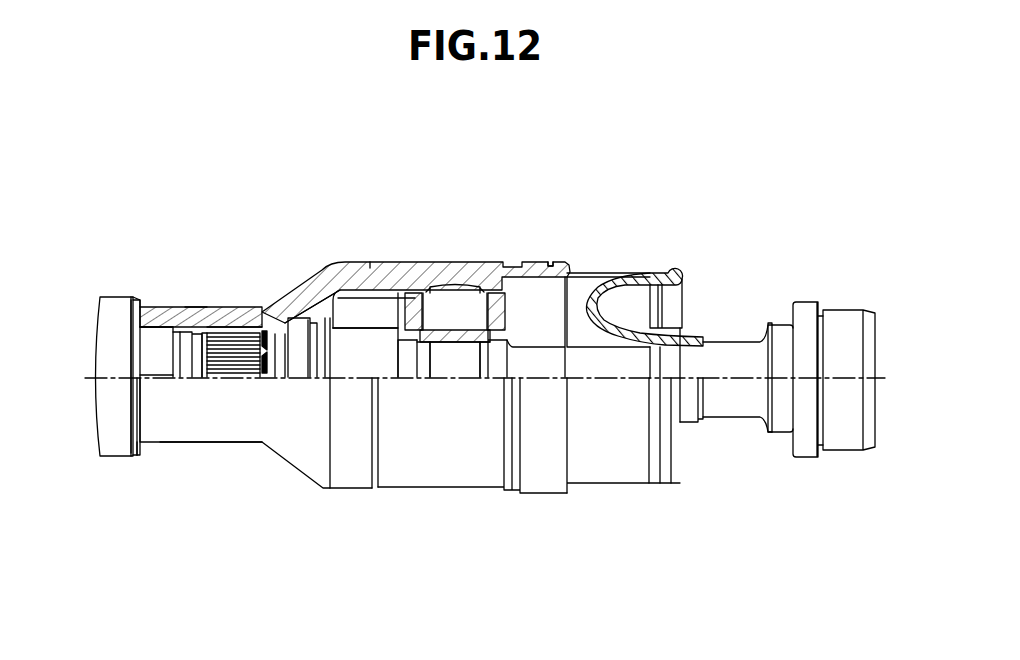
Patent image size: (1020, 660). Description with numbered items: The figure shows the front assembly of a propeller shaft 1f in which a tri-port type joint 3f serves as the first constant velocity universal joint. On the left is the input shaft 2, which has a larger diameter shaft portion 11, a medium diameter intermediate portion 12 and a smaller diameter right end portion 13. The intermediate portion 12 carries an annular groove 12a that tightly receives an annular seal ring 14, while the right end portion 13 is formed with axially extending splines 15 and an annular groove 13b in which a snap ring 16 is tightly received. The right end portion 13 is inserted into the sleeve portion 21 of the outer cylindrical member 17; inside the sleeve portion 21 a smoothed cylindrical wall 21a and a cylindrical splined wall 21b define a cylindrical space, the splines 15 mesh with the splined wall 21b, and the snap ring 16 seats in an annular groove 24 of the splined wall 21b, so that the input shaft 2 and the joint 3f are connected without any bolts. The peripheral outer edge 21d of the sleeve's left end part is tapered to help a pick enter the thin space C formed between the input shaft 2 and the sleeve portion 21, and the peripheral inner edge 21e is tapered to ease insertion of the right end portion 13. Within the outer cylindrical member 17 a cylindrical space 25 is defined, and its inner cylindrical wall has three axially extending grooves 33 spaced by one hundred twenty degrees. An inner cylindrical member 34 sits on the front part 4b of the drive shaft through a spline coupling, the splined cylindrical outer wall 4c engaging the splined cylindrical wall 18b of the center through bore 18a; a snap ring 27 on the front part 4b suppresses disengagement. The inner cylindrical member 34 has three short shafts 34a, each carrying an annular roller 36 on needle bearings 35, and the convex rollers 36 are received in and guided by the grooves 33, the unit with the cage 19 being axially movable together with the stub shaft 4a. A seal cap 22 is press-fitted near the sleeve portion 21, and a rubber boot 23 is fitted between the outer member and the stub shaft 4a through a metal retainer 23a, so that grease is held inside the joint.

The propeller shaft 1f is at (666, 233).
The input shaft 2 is at (117, 460).
The tri-port type joint 3f is at (456, 239).
The stub shaft 4a is at (533, 360).
The front part of drive shaft 4b is at (502, 400).
The splined cylindrical outer wall 4c is at (425, 362).
The larger diameter shaft portion 11 is at (115, 307).
The medium diameter intermediate portion 12 is at (160, 318).
The annular groove 12a is at (175, 362).
The smaller diameter right end portion 13 is at (217, 343).
The annular groove 13b is at (252, 383).
The annular seal ring 14 is at (165, 345).
The splines 15 is at (232, 362).
The snap ring 16 is at (268, 388).
The outer cylindrical member 17 is at (355, 305).
The center through bore 18a is at (468, 367).
The splined cylindrical wall 18b is at (455, 359).
The cage 19 is at (417, 358).
The sleeve portion 21 is at (170, 433).
The smoothed cylindrical wall 21a is at (205, 333).
The cylindrical splined wall 21b is at (237, 333).
The peripheral outer edge 21d is at (133, 306).
The peripheral inner edge 21e is at (133, 328).
The seal cap 22 is at (300, 345).
The rubber boot 23 is at (635, 325).
The metal retainer 23a is at (508, 327).
The annular groove 24 is at (265, 333).
The cylindrical space 25 is at (322, 327).
The snap ring 27 is at (343, 342).
The axially extending grooves 33 is at (338, 300).
The inner cylindrical member 34 is at (483, 288).
The short shafts 34a is at (441, 300).
The needle bearings 35 is at (507, 310).
The annular roller 36 is at (548, 262).
The thin space C is at (137, 447).